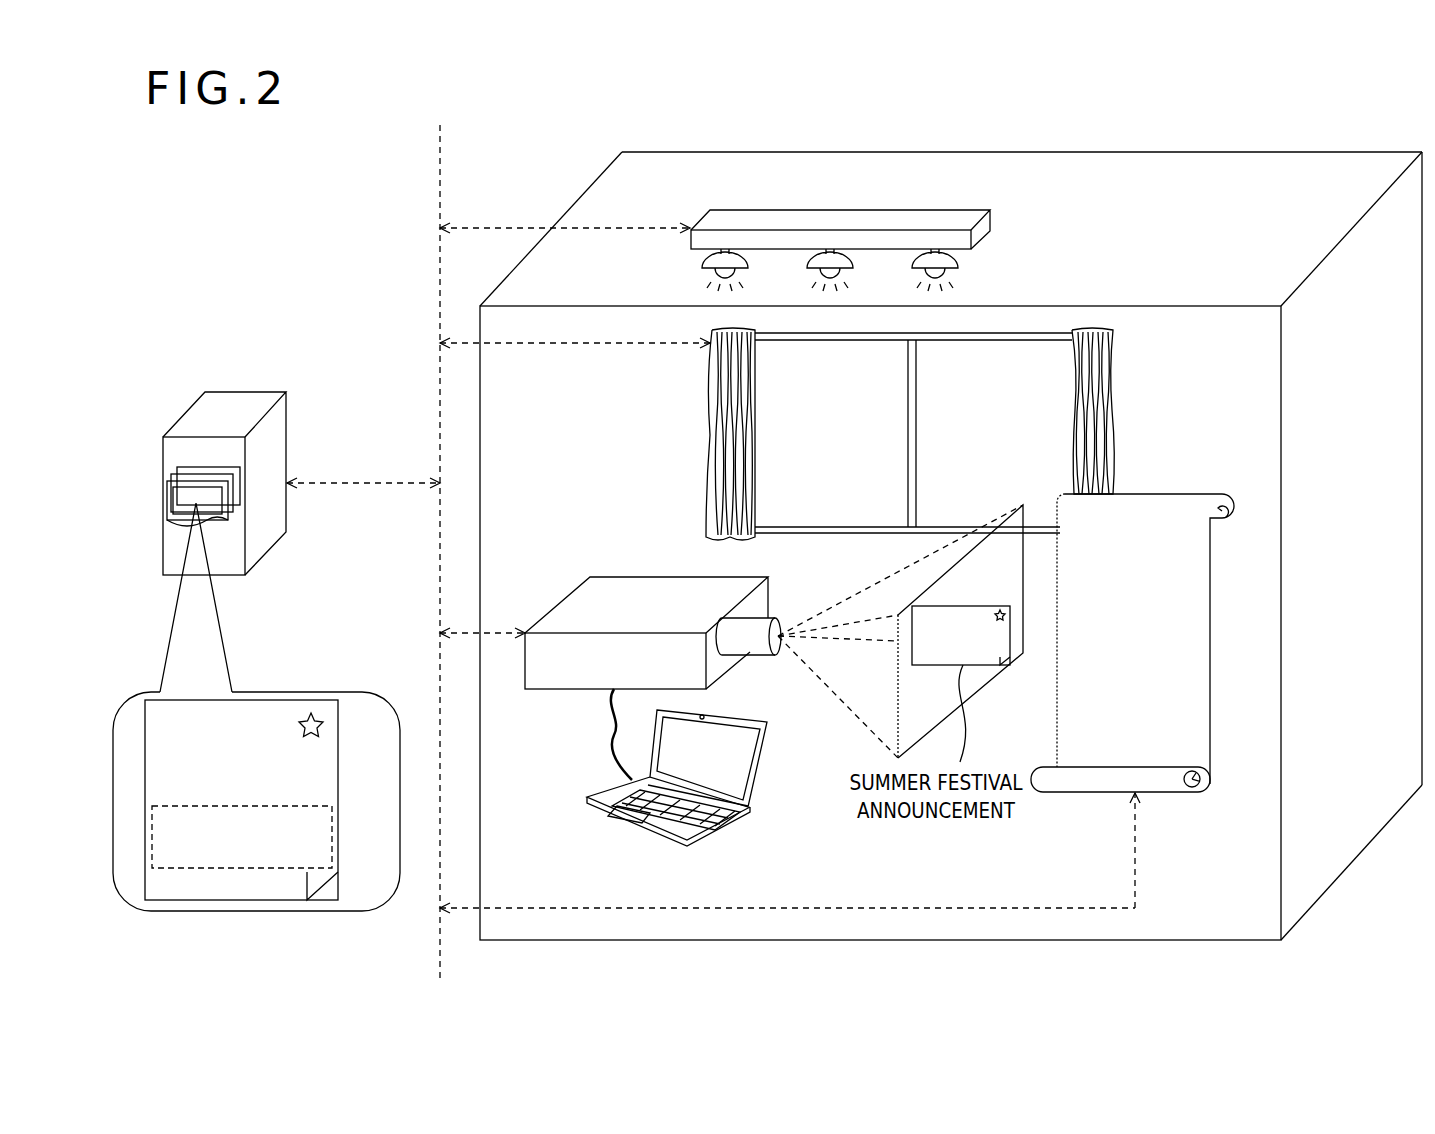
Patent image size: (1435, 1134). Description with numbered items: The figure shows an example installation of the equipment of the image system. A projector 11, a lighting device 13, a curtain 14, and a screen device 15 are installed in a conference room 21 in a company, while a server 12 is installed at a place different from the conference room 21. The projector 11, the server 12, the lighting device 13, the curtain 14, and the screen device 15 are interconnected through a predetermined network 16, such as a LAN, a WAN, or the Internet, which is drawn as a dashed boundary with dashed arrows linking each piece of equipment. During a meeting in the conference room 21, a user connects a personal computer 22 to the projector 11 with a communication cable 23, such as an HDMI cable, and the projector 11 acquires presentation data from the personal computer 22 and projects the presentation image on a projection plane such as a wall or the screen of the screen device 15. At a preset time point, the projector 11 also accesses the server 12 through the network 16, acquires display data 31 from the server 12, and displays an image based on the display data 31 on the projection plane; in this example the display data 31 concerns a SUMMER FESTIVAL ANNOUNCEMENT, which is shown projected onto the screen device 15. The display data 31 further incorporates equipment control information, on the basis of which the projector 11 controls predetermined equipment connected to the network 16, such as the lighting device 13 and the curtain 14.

The projector 11 is at (652, 578).
The server 12 is at (243, 392).
The lighting device 13 is at (990, 236).
The curtain 14 is at (718, 420).
The screen device 15 is at (1210, 585).
The network 16 is at (440, 283).
The conference room 21 is at (1128, 942).
The personal computer 22 is at (718, 822).
The communication cable 23 is at (608, 732).
The display data 31 is at (240, 902).